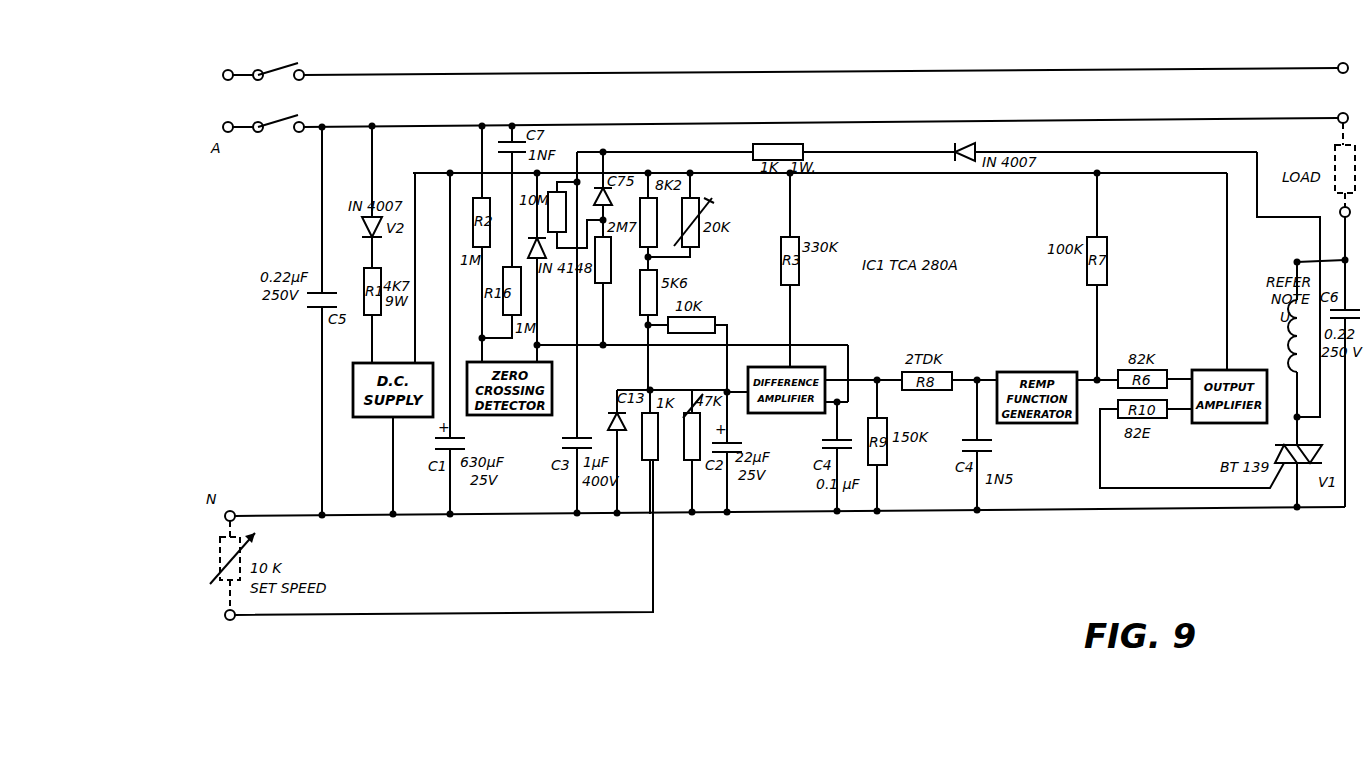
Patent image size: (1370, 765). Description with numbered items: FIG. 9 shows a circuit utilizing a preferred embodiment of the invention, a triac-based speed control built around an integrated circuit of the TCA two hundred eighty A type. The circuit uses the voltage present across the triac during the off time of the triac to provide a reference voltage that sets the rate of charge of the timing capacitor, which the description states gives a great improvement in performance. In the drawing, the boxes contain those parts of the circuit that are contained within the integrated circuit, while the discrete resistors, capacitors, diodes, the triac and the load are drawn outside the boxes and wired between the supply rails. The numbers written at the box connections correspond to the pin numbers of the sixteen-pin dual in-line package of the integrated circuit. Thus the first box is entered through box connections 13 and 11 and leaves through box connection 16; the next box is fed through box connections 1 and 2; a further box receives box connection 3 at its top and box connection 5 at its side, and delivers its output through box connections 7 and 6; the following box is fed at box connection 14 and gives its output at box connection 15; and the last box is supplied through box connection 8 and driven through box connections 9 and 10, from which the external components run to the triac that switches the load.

The box connection 1 is at (476, 351).
The box connection 2 is at (544, 353).
The box connection 3 is at (797, 356).
The box connection 5 is at (736, 385).
The box connection 6 is at (836, 396).
The box connection 7 is at (863, 371).
The box connection 8 is at (1222, 360).
The box connection 9 is at (1179, 387).
The box connection 10 is at (1180, 417).
The box connection 11 is at (428, 268).
The box connection 13 is at (358, 351).
The box connection 14 is at (971, 409).
The box connection 15 is at (1097, 387).
The box connection 16 is at (384, 467).